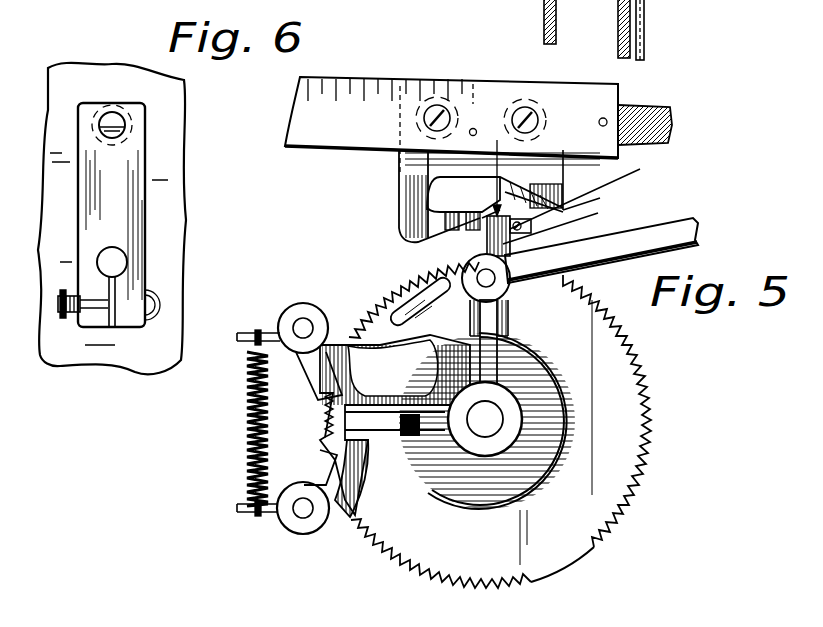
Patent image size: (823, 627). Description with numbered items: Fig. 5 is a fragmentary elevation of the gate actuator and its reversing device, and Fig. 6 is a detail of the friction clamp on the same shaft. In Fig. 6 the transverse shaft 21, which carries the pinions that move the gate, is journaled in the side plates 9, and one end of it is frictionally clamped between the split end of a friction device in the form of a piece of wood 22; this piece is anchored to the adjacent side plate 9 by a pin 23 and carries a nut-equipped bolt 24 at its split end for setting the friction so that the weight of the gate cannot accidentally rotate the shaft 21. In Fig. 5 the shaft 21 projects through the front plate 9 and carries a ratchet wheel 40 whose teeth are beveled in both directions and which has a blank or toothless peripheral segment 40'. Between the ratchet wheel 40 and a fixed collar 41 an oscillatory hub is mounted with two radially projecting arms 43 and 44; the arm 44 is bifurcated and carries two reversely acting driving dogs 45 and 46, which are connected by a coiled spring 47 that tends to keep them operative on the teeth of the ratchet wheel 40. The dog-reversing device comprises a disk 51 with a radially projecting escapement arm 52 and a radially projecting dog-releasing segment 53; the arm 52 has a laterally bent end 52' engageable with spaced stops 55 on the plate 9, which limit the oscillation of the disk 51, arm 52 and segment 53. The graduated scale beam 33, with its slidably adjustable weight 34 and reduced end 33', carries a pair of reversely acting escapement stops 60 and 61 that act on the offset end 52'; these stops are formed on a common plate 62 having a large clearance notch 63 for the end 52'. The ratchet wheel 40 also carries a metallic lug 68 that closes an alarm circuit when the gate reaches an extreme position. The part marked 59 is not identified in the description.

In FIG. 6, the side plate 9 is at (95, 82).
In FIG. 6, the transverse shaft 21 is at (118, 260).
In FIG. 5, the transverse shaft 21 is at (492, 412).
In FIG. 6, the friction device 22 is at (111, 215).
In FIG. 6, the pin 23 is at (110, 120).
In FIG. 6, the nut-equipped bolt 24 is at (72, 318).
In FIG. 5, the graduated scale beam 33 is at (451, 133).
In FIG. 5, the reduced end 33' is at (660, 111).
In FIG. 5, the slidably adjustable weight 34 is at (594, 30).
In FIG. 5, the ratchet wheel 40 is at (537, 431).
In FIG. 5, the toothless peripheral segment 40' is at (599, 572).
In FIG. 5, the fixed collar 41 is at (515, 418).
In FIG. 5, the radially projecting arm 43 is at (500, 325).
In FIG. 5, the radially projecting arm 44 is at (360, 497).
In FIG. 5, the driving dog 45 is at (307, 377).
In FIG. 5, the driving dog 46 is at (318, 455).
In FIG. 5, the coiled spring 47 is at (252, 412).
In FIG. 5, the disk 51 is at (433, 358).
In FIG. 5, the escapement arm 52 is at (506, 189).
In FIG. 5, the laterally bent end 52' is at (544, 253).
In FIG. 5, the dog-releasing segment 53 is at (358, 380).
In FIG. 5, the spaced stops 55 is at (589, 192).
In FIG. 5, the lever 59 is at (643, 235).
In FIG. 5, the escapement stop 60 is at (485, 223).
In FIG. 5, the escapement stop 61 is at (566, 178).
In FIG. 5, the common plate 62 is at (408, 173).
In FIG. 5, the clearance notch 63 is at (442, 196).
In FIG. 5, the metallic lug 68 is at (392, 283).